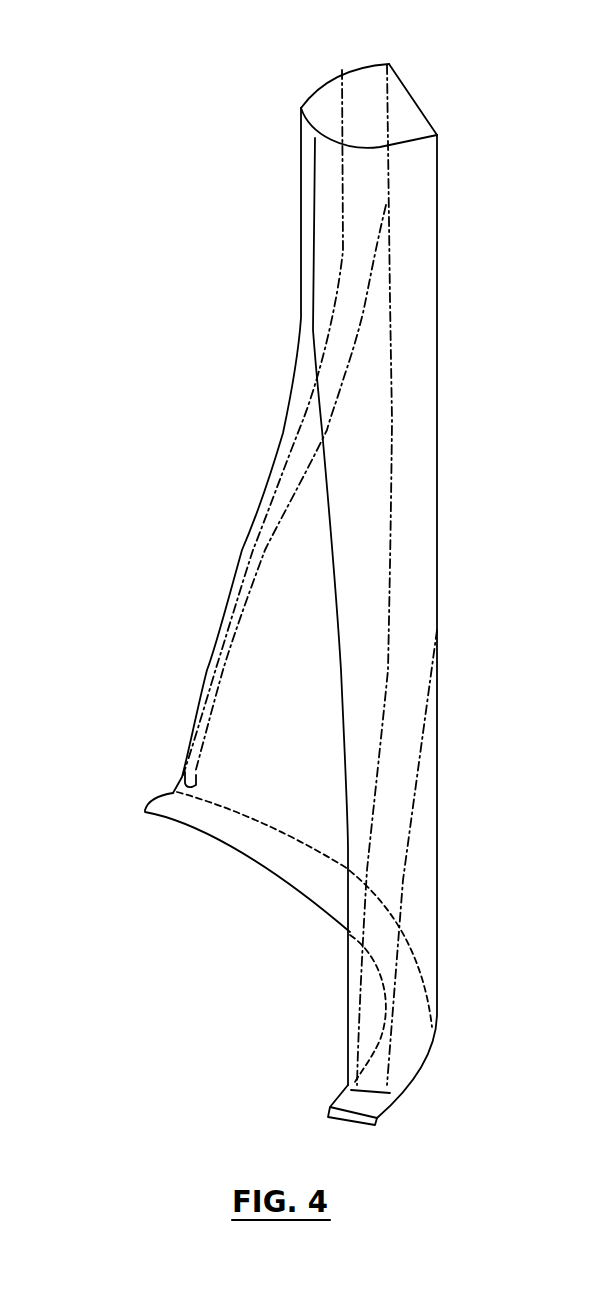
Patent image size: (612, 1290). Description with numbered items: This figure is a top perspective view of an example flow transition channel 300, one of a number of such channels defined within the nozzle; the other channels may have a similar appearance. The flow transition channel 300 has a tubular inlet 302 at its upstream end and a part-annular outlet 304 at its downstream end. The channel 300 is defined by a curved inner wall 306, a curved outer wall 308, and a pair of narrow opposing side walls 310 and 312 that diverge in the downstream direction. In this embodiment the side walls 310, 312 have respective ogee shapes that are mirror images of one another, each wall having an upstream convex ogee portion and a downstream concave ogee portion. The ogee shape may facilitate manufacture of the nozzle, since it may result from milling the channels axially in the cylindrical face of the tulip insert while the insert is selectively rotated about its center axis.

The flow transition channel 300 is at (180, 538).
The tubular inlet 302 is at (408, 104).
The part-annular outlet 304 is at (282, 888).
The curved inner wall 306 is at (250, 703).
The curved outer wall 308 is at (438, 862).
The side wall 310 is at (410, 680).
The side wall 312 is at (293, 360).